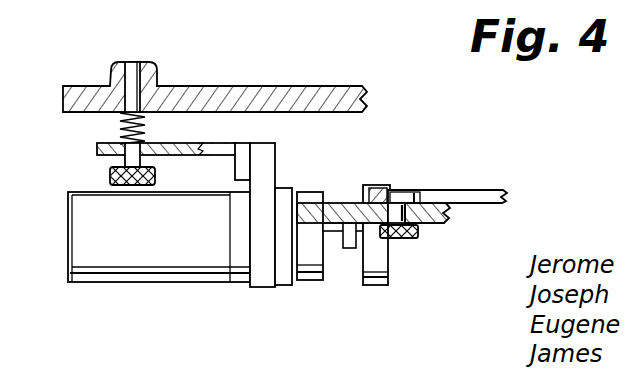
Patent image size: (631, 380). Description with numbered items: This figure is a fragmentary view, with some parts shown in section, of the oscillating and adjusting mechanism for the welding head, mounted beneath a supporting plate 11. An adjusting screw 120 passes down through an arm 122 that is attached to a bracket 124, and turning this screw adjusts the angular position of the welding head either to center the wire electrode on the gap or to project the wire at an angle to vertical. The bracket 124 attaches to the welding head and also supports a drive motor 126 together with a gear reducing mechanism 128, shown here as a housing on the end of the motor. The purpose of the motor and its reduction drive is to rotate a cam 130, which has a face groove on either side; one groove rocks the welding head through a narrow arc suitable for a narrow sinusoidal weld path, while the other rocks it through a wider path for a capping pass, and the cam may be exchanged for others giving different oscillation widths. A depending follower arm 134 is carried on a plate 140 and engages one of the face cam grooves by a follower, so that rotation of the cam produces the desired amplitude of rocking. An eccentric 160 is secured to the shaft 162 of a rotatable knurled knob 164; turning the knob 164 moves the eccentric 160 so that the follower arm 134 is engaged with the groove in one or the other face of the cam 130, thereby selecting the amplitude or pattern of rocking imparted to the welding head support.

The support plate 11 is at (238, 93).
The adjusting screw 120 is at (110, 176).
The arm 122 is at (205, 144).
The bracket 124 is at (258, 288).
The drive motor 126 is at (95, 218).
The gear reducing mechanism 128 is at (308, 192).
The cam 130 is at (380, 285).
The depending arm 134 is at (349, 248).
The plate 140 is at (343, 203).
The eccentric 160 is at (415, 193).
The shaft 162 is at (410, 218).
The knurled knob 164 is at (418, 231).